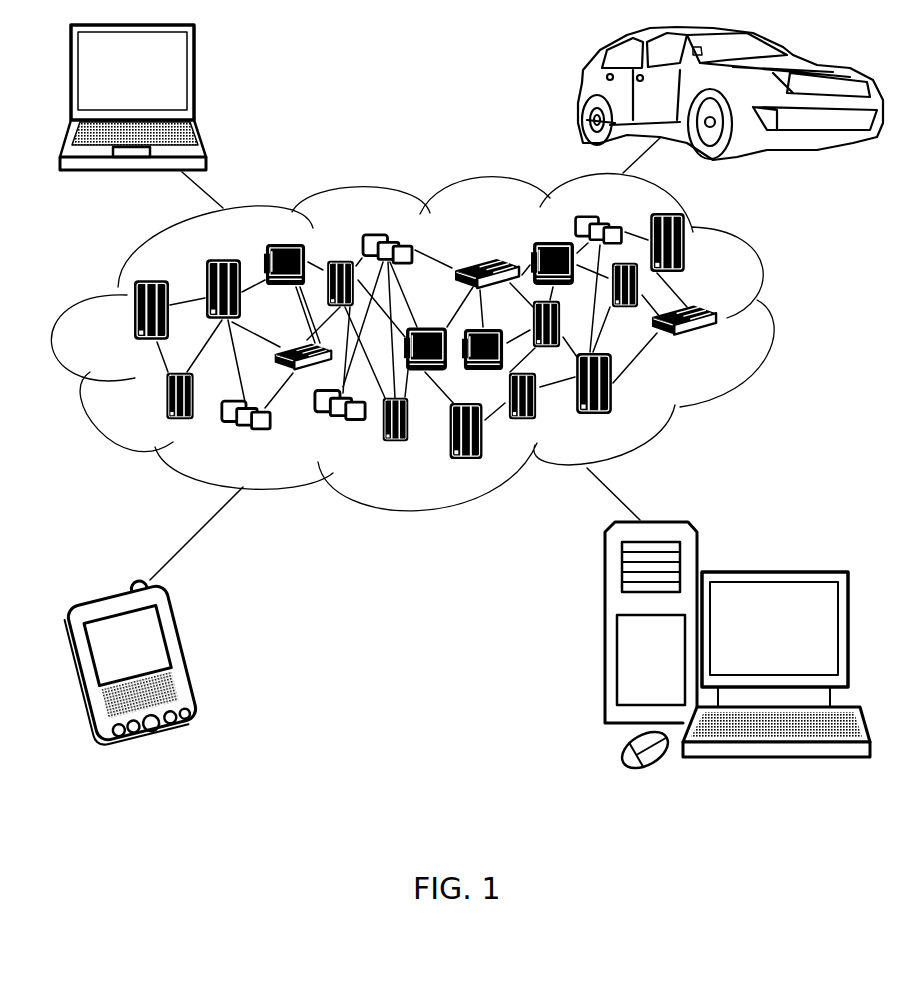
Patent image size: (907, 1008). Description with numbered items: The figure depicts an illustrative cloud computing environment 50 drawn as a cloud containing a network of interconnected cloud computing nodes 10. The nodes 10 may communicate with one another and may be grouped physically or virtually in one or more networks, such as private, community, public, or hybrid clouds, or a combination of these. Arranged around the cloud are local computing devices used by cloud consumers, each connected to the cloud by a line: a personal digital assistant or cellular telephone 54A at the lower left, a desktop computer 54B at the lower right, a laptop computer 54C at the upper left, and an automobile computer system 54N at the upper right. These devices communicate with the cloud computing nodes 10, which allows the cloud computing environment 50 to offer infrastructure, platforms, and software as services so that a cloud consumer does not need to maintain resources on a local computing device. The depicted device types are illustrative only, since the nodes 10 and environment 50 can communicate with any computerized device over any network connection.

The cloud computing nodes 10 is at (470, 336).
The cloud computing environment 50 is at (770, 319).
The personal digital assistant or cellular telephone 54A is at (188, 656).
The desktop computer 54B is at (780, 570).
The laptop computer 54C is at (197, 76).
The automobile computer system 54N is at (578, 92).